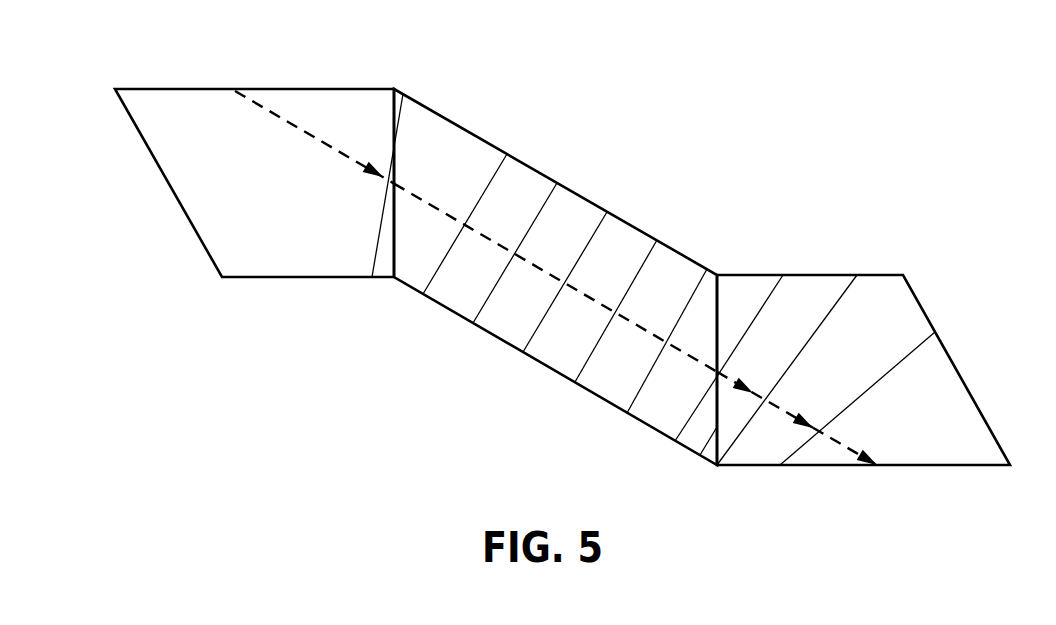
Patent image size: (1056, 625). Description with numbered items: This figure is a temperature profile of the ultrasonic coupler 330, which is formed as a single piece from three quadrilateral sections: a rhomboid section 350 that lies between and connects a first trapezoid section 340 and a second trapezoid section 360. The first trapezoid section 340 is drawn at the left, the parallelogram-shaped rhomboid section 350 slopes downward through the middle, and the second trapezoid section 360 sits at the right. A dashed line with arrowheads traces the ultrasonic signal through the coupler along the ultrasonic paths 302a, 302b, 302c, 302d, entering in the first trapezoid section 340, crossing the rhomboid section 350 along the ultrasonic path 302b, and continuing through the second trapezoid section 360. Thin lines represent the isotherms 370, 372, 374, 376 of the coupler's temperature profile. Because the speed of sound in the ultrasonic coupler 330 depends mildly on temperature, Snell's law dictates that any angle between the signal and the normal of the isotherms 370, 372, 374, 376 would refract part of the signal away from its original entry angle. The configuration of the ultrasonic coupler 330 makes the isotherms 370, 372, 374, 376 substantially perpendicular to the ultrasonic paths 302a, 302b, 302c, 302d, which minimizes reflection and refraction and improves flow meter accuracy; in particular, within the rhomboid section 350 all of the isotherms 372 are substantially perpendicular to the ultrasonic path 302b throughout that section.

The ultrasonic coupler 330 is at (596, 120).
The first trapezoid section 340 is at (213, 207).
The rhomboid section 350 is at (578, 208).
The second trapezoid section 360 is at (955, 397).
The isotherm 370 is at (375, 245).
The isotherms 372 is at (487, 297).
The isotherm 374 is at (708, 432).
The isotherm 376 is at (907, 357).
The ultrasonic path 302a is at (283, 118).
The ultrasonic path 302b is at (425, 198).
The ultrasonic path 302c is at (772, 403).
The ultrasonic path 302d is at (847, 447).